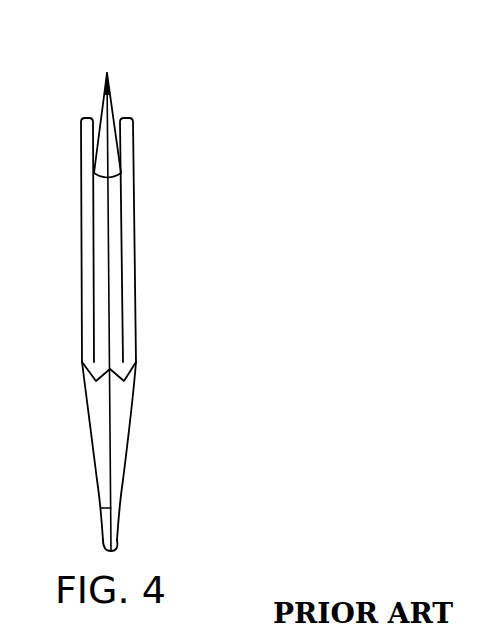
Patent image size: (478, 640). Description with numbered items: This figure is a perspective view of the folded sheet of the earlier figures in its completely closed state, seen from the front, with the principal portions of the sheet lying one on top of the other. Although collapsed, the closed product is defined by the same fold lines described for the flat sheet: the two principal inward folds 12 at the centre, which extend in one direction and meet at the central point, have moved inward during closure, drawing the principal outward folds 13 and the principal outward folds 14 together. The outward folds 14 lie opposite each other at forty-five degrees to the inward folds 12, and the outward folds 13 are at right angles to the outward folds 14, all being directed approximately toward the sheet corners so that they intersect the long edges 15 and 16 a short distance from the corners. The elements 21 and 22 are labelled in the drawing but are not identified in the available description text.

The principal inward fold 12 is at (101, 508).
The principal outward fold 13 is at (95, 462).
The principal outward fold 14 is at (128, 460).
The long edge 15 is at (142, 106).
The long edge 16 is at (107, 74).
The right rod / holder half 21 is at (133, 118).
The left rod / holder half 22 is at (83, 119).